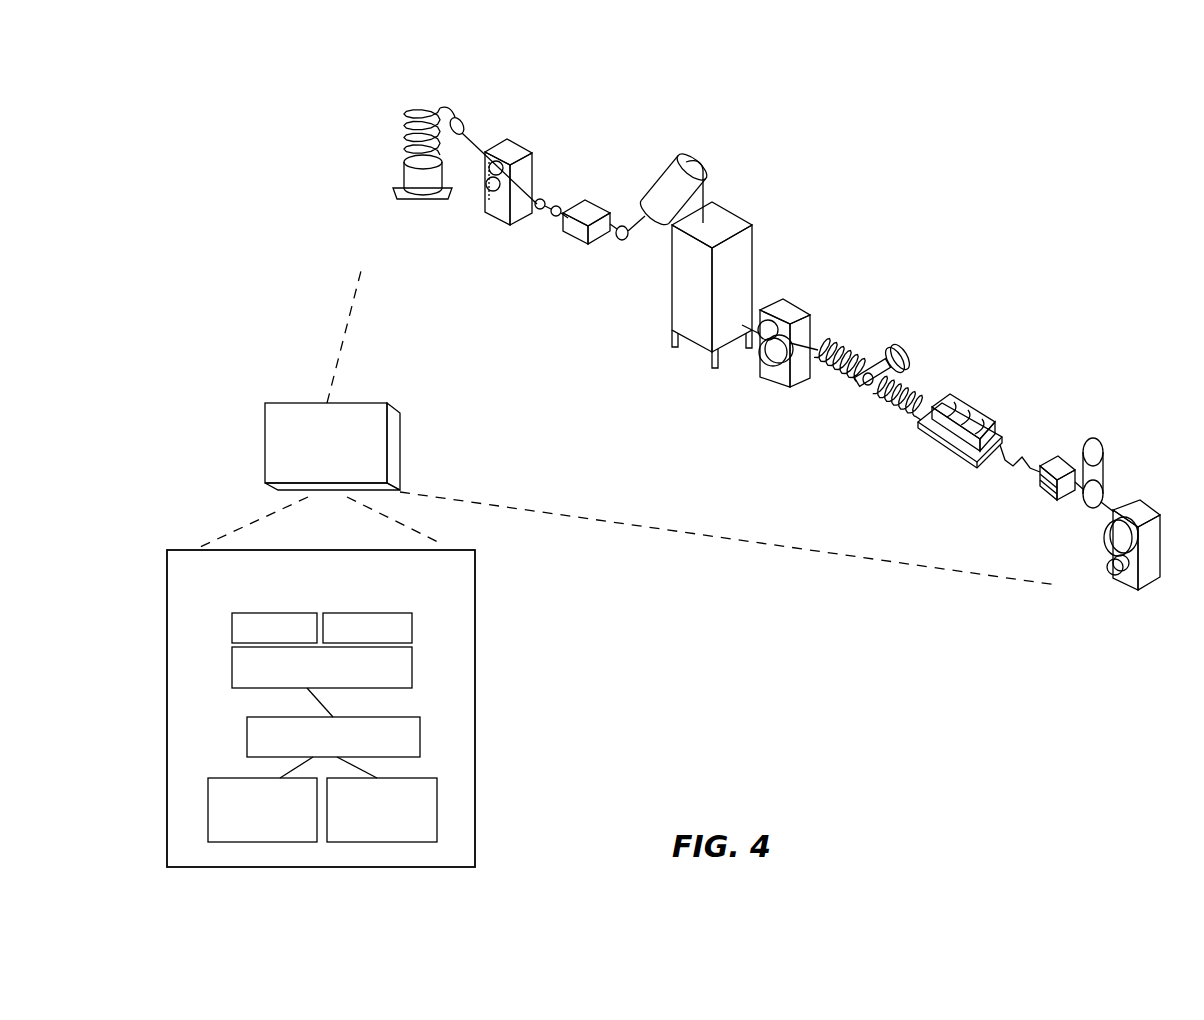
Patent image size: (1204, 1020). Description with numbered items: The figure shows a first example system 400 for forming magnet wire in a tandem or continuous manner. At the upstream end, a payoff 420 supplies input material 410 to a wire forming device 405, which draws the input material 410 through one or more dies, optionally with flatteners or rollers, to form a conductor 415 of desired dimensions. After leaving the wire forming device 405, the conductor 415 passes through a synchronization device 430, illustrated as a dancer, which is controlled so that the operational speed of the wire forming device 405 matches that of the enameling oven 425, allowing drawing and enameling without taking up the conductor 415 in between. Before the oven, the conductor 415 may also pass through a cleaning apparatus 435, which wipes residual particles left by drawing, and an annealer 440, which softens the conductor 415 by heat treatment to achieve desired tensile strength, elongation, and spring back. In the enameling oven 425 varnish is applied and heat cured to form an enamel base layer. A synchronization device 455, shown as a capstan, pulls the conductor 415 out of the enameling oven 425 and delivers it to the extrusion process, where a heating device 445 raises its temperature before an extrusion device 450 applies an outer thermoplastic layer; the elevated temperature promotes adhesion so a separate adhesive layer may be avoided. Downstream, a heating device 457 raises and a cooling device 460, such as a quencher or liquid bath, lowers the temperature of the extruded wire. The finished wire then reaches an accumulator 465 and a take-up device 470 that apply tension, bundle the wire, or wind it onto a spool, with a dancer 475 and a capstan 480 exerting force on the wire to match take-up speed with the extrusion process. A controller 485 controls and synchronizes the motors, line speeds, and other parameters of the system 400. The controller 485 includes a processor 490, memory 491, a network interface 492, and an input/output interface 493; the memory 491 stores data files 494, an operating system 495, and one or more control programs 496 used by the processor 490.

The system 400 is at (1052, 193).
The wire forming device 405 is at (502, 222).
The input material 410 is at (443, 103).
The conductor 415 is at (505, 185).
The payoff 420 is at (423, 207).
The enameling oven 425 is at (730, 218).
The synchronization device 430 is at (547, 223).
The cleaning apparatus 435 is at (597, 241).
The annealer 440 is at (662, 200).
The heating device 445 is at (837, 340).
The extrusion device 450 is at (897, 343).
The synchronization device 455 is at (785, 300).
The heating device 457 is at (923, 390).
The cooling device 460 is at (983, 412).
The accumulator 465 is at (1087, 500).
The take-up device 470 is at (1150, 497).
The dancer 475 is at (1062, 460).
The capstan 480 is at (1008, 480).
The controller 485 is at (306, 437).
The processor 490 is at (333, 737).
The memory device 491 is at (321, 708).
The network interface 492 is at (262, 810).
The input/output interface 493 is at (382, 810).
The data files 494 is at (274, 628).
The operating system 495 is at (367, 628).
The control program 496 is at (322, 667).